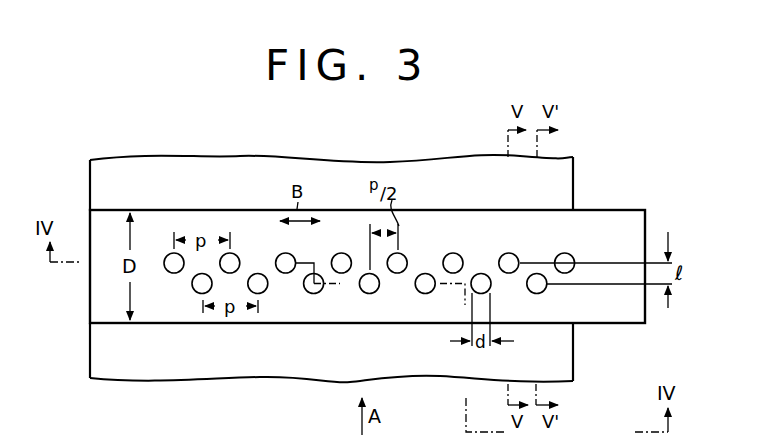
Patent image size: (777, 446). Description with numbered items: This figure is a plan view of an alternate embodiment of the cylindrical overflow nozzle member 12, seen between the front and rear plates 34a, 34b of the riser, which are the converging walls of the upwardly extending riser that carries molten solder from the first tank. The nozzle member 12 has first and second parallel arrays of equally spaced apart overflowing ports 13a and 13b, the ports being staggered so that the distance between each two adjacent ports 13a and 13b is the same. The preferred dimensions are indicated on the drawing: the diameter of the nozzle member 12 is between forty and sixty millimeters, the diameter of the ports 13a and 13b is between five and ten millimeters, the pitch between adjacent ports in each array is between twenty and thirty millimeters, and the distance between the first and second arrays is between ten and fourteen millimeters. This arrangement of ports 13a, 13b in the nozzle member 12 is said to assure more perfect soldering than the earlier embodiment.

The nozzle member 12 is at (100, 307).
The overflowing ports of first array 13a is at (513, 256).
The overflowing ports of second array 13b is at (542, 291).
The front plate 34a is at (558, 355).
The rear plate 34b is at (562, 184).